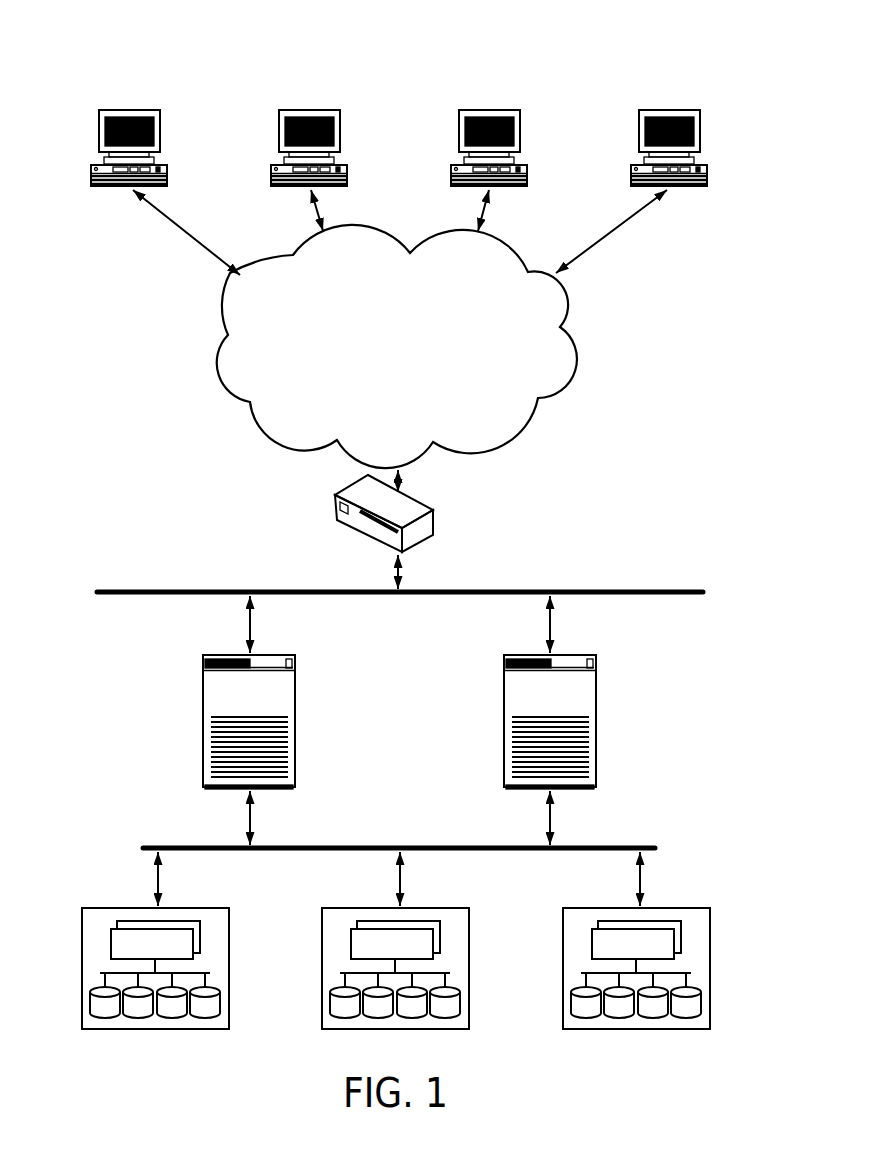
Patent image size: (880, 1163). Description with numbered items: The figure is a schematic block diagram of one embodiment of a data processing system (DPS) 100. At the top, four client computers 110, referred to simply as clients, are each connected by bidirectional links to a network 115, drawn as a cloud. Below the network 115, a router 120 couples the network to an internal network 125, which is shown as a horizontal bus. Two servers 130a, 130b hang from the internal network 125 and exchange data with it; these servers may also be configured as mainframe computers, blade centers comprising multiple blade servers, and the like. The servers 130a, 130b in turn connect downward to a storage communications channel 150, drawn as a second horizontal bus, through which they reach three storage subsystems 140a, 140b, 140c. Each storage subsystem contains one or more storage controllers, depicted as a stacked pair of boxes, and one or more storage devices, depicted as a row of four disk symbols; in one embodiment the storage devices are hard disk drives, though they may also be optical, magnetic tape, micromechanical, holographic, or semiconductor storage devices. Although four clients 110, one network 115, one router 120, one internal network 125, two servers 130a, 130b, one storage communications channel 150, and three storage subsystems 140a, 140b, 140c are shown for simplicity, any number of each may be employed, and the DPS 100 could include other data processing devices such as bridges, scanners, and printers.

The data processing system 100 is at (96, 74).
The client computer 110 is at (425, 127).
The network 115 is at (408, 368).
The router 120 is at (432, 513).
The internal network 125 is at (115, 589).
The server 130a is at (295, 653).
The server 130b is at (596, 650).
The storage communications channel 150 is at (337, 847).
The storage subsystem 140a is at (229, 907).
The storage subsystem 140b is at (469, 907).
The storage subsystem 140c is at (710, 907).